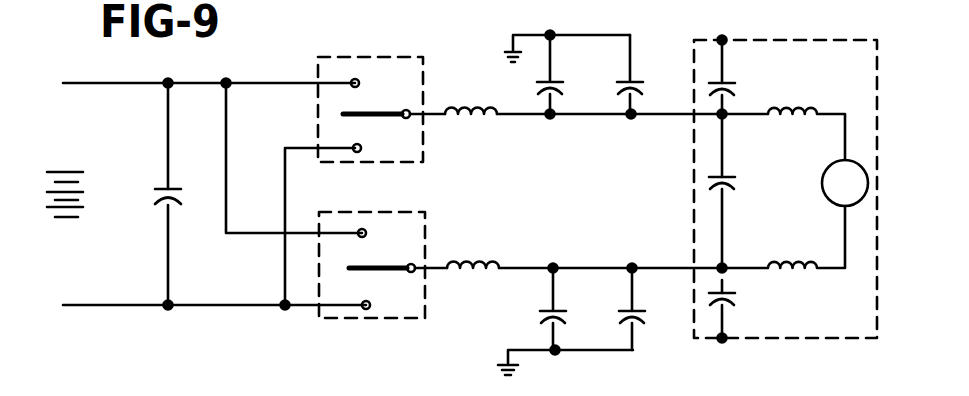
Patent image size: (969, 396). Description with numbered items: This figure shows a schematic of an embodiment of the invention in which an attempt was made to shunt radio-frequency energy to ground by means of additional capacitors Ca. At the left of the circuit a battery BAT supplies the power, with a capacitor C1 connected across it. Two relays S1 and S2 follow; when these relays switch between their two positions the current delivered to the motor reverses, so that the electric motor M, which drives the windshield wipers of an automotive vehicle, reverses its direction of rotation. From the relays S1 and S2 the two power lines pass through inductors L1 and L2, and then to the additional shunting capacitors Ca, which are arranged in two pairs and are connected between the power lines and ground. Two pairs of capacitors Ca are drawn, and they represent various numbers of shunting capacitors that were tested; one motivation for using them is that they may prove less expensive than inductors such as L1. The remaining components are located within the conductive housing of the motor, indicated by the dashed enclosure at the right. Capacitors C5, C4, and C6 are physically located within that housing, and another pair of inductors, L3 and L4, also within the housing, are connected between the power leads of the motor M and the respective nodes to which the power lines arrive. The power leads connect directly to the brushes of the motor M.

The battery BAT is at (91, 194).
The capacitor C1 is at (182, 192).
The relay S1 is at (381, 109).
The relay S2 is at (383, 265).
The inductor L1 is at (471, 91).
The inductor L2 is at (473, 246).
The capacitor Ca is at (585, 203).
The capacitor C5 is at (739, 86).
The capacitor C4 is at (740, 183).
The capacitor C6 is at (740, 299).
The inductor L3 is at (783, 114).
The inductor L4 is at (783, 237).
The electric motor M is at (845, 183).